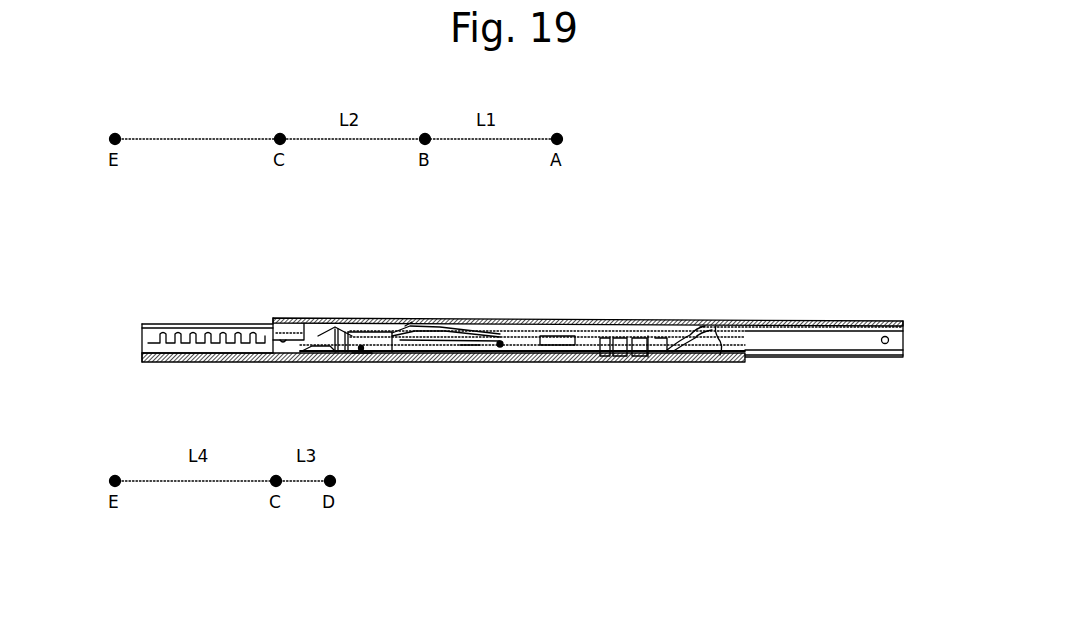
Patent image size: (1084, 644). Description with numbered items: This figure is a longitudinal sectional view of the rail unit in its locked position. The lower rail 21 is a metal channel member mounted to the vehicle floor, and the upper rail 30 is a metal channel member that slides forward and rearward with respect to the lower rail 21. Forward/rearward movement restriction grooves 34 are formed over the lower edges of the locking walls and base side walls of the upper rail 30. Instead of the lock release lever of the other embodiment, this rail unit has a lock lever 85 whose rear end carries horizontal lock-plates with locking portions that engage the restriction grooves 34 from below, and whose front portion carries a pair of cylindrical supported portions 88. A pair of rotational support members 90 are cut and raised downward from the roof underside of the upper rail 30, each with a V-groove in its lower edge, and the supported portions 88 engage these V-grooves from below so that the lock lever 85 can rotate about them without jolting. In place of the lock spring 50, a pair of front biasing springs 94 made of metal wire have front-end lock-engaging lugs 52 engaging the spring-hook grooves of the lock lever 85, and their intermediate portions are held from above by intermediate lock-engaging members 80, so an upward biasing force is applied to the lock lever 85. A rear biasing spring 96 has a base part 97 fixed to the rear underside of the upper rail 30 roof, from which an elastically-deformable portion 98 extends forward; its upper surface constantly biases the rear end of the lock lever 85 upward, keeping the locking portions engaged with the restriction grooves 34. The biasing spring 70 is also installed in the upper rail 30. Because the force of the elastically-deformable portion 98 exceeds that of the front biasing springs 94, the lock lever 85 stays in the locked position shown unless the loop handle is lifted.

The lower rail 21 is at (195, 325).
The upper rail 30 is at (838, 321).
The forward/rearward movement restriction grooves 34 is at (643, 362).
The lock spring 50 is at (468, 353).
The front-end lock-engaging lugs 52 is at (360, 353).
The biasing spring 70 is at (332, 326).
The intermediate lock-engaging members 80 is at (500, 353).
The lock lever 85 is at (305, 320).
The cylindrical supported portions 88 is at (428, 353).
The rotational support members 90 is at (418, 325).
The front biasing springs 94 is at (548, 353).
The rear biasing spring 96 is at (720, 355).
The base part 97 is at (694, 340).
The elastically-deformable portion 98 is at (672, 362).